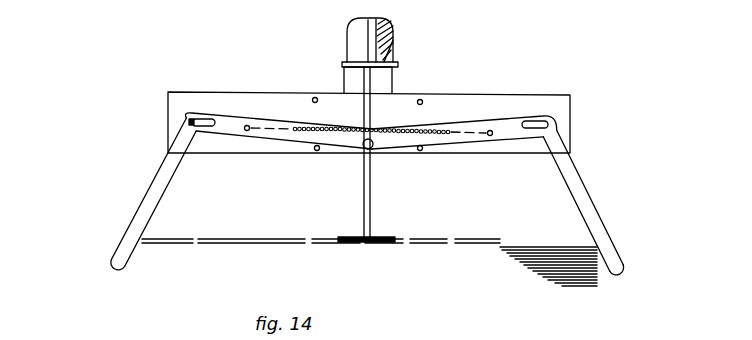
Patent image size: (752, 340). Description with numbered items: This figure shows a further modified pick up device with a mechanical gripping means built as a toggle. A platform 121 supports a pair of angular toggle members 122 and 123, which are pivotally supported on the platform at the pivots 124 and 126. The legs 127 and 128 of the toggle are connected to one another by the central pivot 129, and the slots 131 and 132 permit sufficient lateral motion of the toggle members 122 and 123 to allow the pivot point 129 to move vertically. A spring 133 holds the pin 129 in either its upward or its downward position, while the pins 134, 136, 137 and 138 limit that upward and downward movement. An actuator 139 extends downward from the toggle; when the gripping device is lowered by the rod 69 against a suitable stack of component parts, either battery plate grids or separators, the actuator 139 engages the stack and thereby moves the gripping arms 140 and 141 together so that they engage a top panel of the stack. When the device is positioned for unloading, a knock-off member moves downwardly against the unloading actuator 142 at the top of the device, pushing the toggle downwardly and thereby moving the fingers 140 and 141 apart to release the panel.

The rod 69 is at (360, 42).
The platform 121 is at (518, 108).
The toggle member 122 is at (578, 188).
The toggle member 123 is at (162, 172).
The pivot 124 is at (565, 134).
The pivot 126 is at (190, 120).
The leg 127 is at (470, 138).
The leg 128 is at (270, 131).
The pivot 129 is at (372, 150).
The slot 131 is at (200, 119).
The slot 132 is at (540, 124).
The spring 133 is at (423, 128).
The pin 134 is at (420, 99).
The pin 136 is at (315, 97).
The pin 137 is at (318, 151).
The pin 138 is at (421, 151).
The actuator 139 is at (364, 224).
The gripping arm 140 is at (602, 238).
The gripping arm 141 is at (117, 260).
The unloading actuator 142 is at (395, 45).